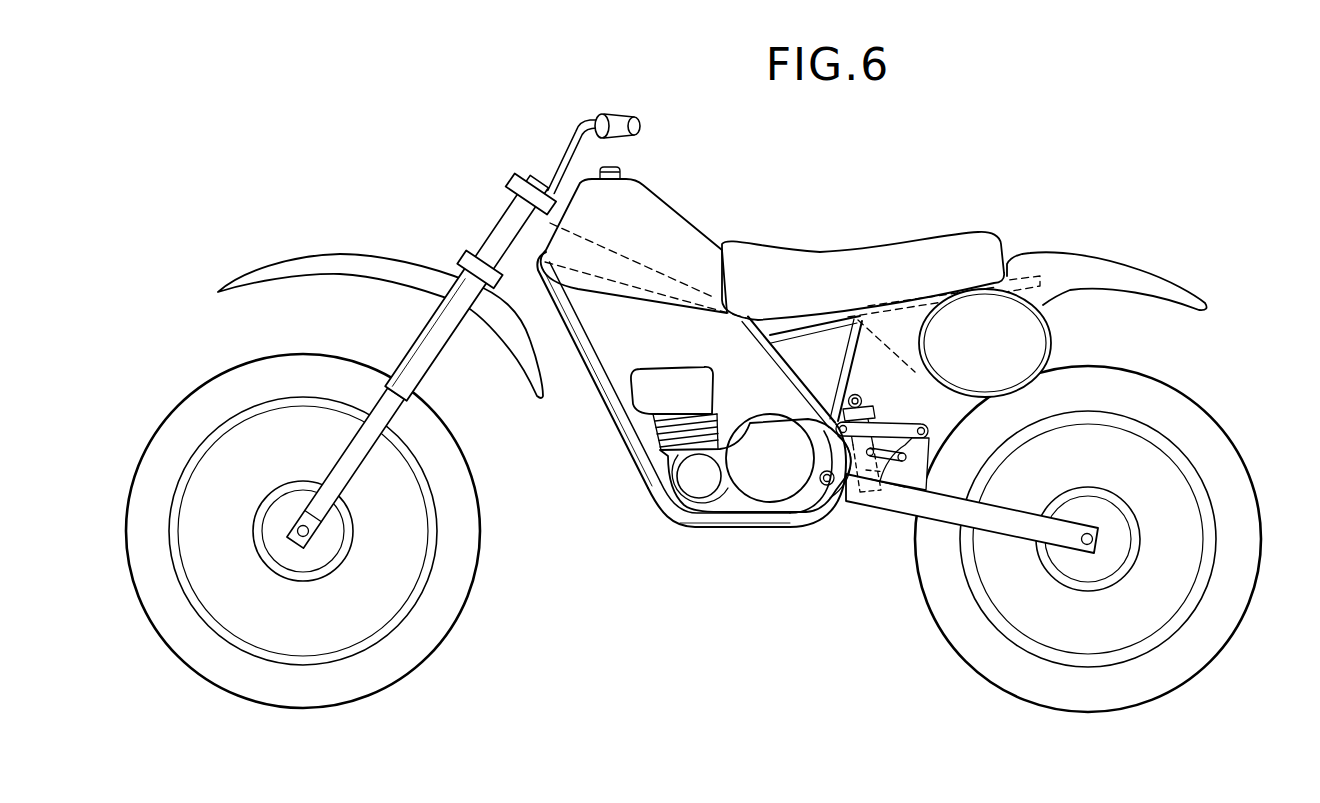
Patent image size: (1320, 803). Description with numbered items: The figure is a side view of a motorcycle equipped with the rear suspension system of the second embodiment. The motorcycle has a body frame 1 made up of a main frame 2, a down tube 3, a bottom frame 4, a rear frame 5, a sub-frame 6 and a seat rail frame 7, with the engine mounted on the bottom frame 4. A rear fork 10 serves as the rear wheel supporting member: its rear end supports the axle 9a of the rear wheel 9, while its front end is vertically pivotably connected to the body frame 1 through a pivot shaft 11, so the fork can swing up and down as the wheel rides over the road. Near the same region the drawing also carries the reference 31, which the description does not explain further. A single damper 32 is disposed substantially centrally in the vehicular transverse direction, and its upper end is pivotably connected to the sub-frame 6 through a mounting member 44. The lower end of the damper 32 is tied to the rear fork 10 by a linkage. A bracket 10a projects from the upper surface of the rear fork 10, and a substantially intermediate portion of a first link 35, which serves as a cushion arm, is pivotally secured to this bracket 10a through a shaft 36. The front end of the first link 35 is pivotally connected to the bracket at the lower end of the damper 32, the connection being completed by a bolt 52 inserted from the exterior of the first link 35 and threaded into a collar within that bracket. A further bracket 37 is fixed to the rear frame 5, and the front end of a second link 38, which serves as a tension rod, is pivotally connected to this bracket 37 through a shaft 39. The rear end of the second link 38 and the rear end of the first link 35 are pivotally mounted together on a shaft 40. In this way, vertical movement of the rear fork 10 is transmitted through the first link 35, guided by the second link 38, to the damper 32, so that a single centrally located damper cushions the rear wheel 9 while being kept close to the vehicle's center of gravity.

The body frame 1 is at (696, 525).
The main frame 2 is at (652, 262).
The down tube 3 is at (603, 409).
The bottom frame 4 is at (723, 531).
The rear frame 5 is at (764, 352).
The sub-frame 6 is at (884, 369).
The seat rail frame 7 is at (808, 336).
The rear wheel 9 is at (1218, 641).
The axle 9a is at (1086, 546).
The rear fork 10 is at (1022, 512).
The bracket 10a is at (901, 481).
The pivot shaft 11 is at (412, 668).
The pivot shaft 31 is at (827, 487).
The damper 32 is at (871, 417).
The first link 35 is at (880, 473).
The shaft 36 is at (908, 455).
The bracket 37 is at (822, 431).
The second link 38 is at (893, 424).
The shaft 39 is at (848, 410).
The shaft 40 is at (927, 431).
The mounting member 44 is at (843, 396).
The bolt 52 is at (849, 452).